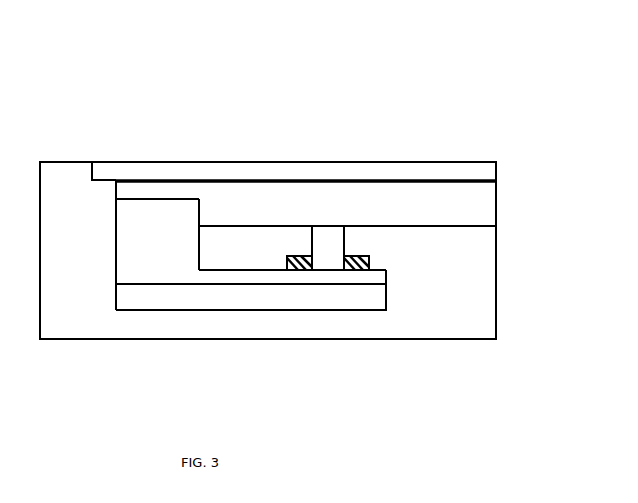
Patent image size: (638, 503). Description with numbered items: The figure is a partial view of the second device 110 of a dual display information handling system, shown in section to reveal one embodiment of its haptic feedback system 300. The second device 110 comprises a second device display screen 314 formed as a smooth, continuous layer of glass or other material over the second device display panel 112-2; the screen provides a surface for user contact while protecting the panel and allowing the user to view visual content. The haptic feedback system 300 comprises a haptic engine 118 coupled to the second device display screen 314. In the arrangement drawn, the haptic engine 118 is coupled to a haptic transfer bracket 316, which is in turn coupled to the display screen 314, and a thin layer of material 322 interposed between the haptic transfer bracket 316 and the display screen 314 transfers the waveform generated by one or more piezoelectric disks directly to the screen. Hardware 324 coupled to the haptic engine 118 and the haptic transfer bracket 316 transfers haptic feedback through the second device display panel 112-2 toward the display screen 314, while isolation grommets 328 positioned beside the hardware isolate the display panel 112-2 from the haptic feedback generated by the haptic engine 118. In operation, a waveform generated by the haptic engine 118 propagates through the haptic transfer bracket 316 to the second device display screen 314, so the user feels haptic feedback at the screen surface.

The second device 110 is at (484, 74).
The haptic feedback system 300 is at (90, 163).
The second device display screen 314 is at (417, 162).
The thin layer of material 322 is at (170, 179).
The second device display panel 112-2 is at (496, 198).
The haptic transfer bracket 316 is at (202, 269).
The hardware 324 is at (311, 247).
The isolation grommets 328 is at (368, 262).
The haptic engine 118 is at (387, 297).